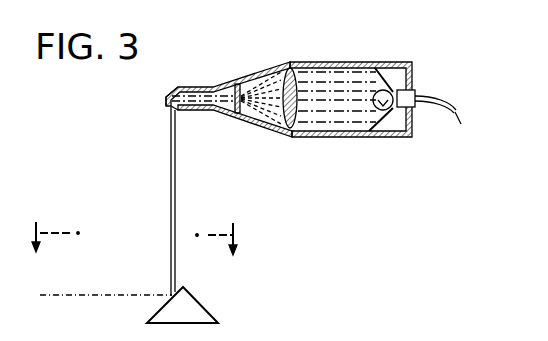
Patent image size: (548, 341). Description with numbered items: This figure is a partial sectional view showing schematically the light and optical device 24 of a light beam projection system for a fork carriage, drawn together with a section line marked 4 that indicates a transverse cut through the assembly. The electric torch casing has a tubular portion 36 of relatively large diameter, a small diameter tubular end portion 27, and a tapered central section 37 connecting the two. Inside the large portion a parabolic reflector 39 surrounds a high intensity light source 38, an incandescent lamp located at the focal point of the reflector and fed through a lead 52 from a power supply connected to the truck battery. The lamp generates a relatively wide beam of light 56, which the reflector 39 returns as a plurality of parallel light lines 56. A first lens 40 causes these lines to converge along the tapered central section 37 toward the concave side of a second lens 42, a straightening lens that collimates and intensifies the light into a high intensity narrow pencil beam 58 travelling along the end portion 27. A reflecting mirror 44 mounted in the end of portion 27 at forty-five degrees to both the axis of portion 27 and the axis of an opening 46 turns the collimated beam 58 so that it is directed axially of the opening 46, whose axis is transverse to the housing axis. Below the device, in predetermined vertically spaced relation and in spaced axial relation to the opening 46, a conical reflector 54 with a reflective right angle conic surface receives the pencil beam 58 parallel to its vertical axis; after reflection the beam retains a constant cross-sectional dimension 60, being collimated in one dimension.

The section line 4- 4 is at (135, 238).
The light and optical device 24 is at (364, 62).
The small diameter tubular end portion 27 is at (200, 86).
The tubular portion 36 is at (349, 138).
The tapered central section 37 is at (264, 71).
The light source 38 is at (405, 88).
The parabolic reflector 39 is at (389, 136).
The first lens 40 is at (295, 138).
The second lens 42 is at (244, 119).
The reflecting mirror 44 is at (168, 91).
The opening 46 is at (168, 106).
The lead 52 is at (451, 103).
The conical reflector 54 is at (195, 312).
The beam of light 56 is at (324, 80).
The pencil beam 58 is at (209, 111).
The cross-sectional dimension 60 is at (100, 293).